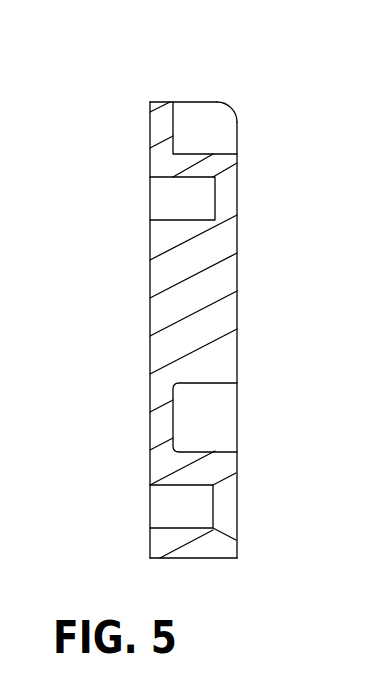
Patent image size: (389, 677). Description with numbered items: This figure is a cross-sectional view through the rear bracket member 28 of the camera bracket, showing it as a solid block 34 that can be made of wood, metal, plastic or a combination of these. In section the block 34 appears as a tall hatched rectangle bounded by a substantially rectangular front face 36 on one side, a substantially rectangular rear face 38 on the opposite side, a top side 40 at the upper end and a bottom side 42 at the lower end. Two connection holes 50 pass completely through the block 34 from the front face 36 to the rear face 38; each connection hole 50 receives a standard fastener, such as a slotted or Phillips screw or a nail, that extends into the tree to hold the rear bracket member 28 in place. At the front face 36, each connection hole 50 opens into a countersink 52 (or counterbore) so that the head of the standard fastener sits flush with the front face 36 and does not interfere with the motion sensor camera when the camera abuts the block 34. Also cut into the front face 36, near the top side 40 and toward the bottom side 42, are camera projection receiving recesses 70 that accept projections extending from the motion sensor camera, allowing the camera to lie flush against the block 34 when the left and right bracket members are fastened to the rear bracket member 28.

The rear bracket member 28 is at (146, 347).
The block 34 is at (151, 330).
The front face 36 is at (237, 347).
The rear face 38 is at (158, 441).
The top side 40 is at (163, 102).
The bottom side 42 is at (218, 558).
The connection hole 50 is at (166, 202).
The countersink 52 is at (217, 230).
The camera projection receiving recess 70 is at (200, 128).